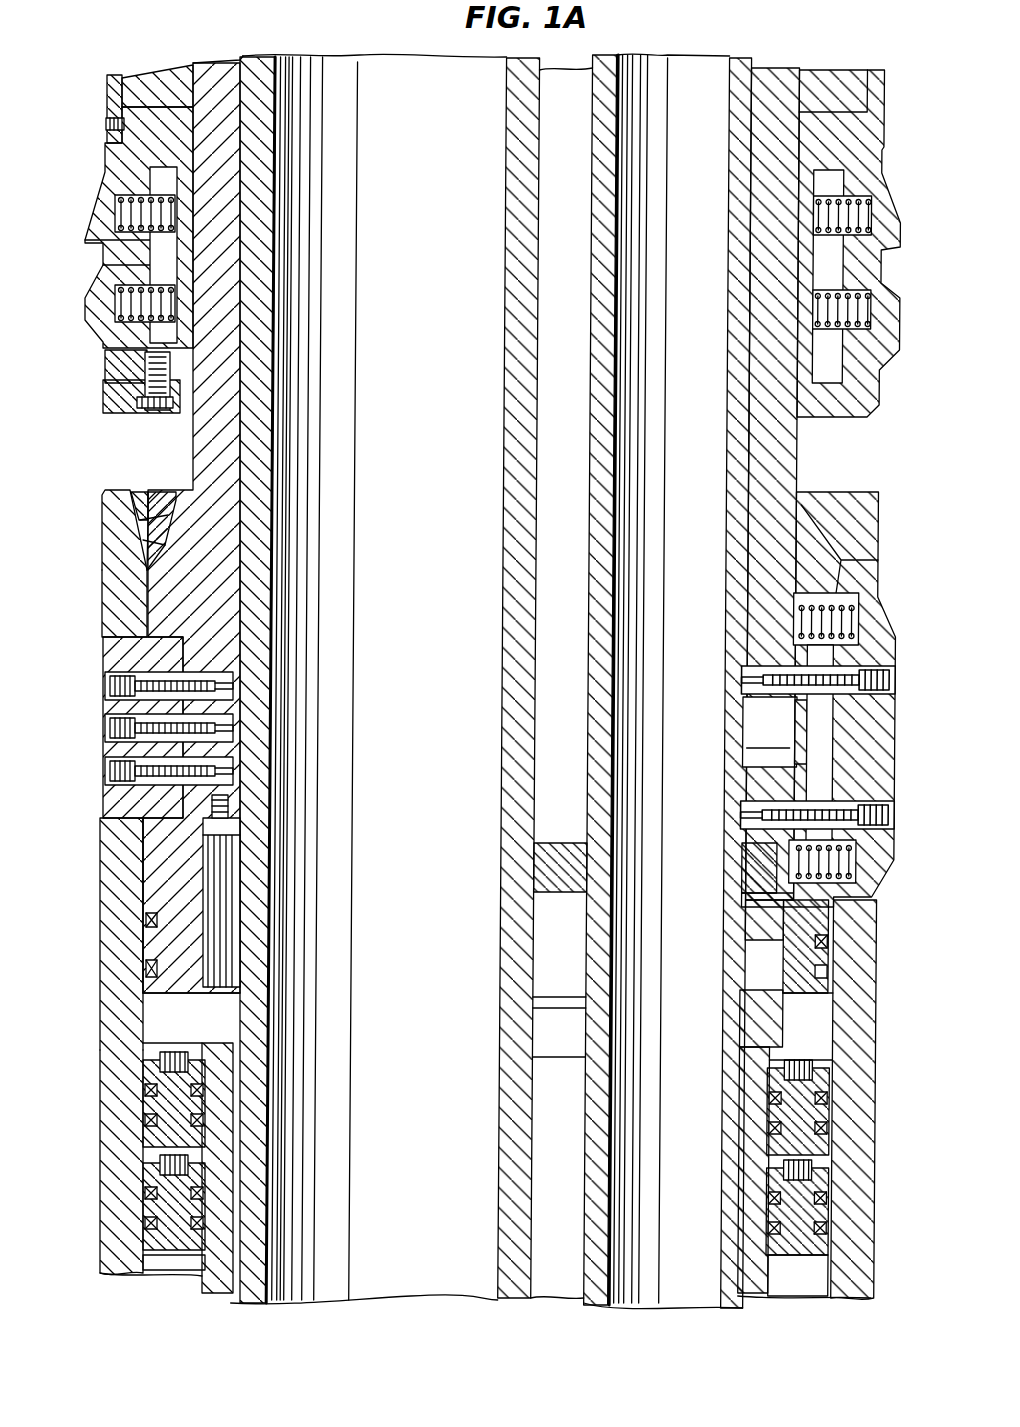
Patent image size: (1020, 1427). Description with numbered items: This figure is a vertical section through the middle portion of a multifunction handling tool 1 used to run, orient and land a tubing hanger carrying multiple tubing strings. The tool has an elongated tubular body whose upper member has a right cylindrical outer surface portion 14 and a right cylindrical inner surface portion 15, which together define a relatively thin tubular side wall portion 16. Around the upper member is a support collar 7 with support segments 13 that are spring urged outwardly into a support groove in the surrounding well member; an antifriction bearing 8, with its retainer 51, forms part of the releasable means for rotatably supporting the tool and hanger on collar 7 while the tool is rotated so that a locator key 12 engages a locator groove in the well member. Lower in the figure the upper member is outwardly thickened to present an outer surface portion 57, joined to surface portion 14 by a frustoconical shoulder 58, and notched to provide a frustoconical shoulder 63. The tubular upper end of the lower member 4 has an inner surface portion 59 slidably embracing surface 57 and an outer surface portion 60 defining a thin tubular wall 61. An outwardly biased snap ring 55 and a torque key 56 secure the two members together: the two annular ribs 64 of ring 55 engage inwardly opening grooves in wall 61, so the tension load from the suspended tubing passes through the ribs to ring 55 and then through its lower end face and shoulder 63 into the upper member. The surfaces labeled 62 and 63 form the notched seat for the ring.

The multifunction handling tool 1 is at (203, 60).
The lower member 4 is at (99, 926).
The support collar 7 is at (105, 158).
The antifriction bearing 8 is at (147, 60).
The locator key 12 is at (903, 635).
The support segments 13 is at (242, 243).
The outer surface portion 14 is at (190, 425).
The inner surface portion 15 is at (243, 144).
The tubular side wall portion 16 is at (222, 114).
The retainer 51 is at (108, 82).
The ring 55 is at (150, 490).
The torque key 56 is at (105, 652).
The outer surface portion 57 is at (147, 600).
The frustoconical shoulder 58 is at (178, 490).
The inner surface portion 59 is at (145, 1040).
The outer surface portion 60 is at (100, 1062).
The tubular wall 61 is at (112, 957).
The wedge surface 62 is at (152, 523).
The frustoconical shoulder 63 is at (152, 540).
The annular ribs 64 is at (106, 492).